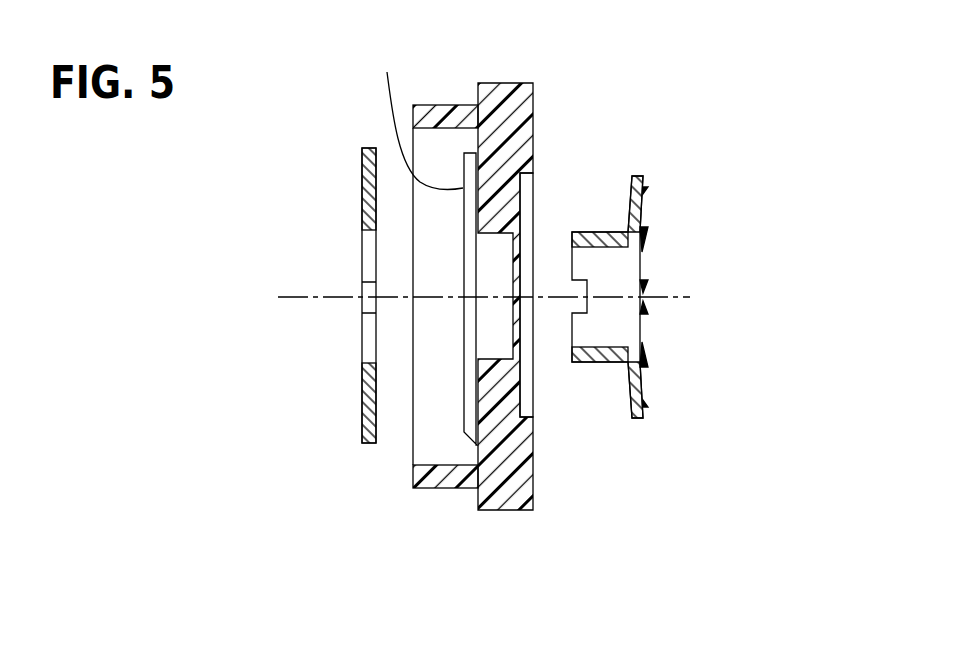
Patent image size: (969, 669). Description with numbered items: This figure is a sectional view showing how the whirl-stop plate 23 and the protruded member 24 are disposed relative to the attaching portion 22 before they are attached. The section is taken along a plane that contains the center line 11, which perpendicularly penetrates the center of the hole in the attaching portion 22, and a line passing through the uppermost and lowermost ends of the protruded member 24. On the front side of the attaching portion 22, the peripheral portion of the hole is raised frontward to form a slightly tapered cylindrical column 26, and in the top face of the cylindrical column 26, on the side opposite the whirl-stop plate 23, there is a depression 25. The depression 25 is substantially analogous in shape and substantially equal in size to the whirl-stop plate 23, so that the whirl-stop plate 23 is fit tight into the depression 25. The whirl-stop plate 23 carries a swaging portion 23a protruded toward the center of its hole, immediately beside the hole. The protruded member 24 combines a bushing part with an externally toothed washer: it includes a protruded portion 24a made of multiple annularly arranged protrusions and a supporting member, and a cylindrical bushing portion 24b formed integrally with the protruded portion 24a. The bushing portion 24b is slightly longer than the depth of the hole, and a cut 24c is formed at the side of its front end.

The center line 11 is at (290, 297).
The attaching portion 22 is at (503, 487).
The whirl-stop plate 23 is at (362, 392).
The swaging portion 23a is at (366, 288).
The protruded member 24 is at (608, 296).
The protruded portion 24a is at (638, 418).
The bushing portion 24b is at (588, 358).
The cut 24c is at (572, 287).
The depression 25 is at (469, 155).
The cylindrical column 26 is at (417, 118).